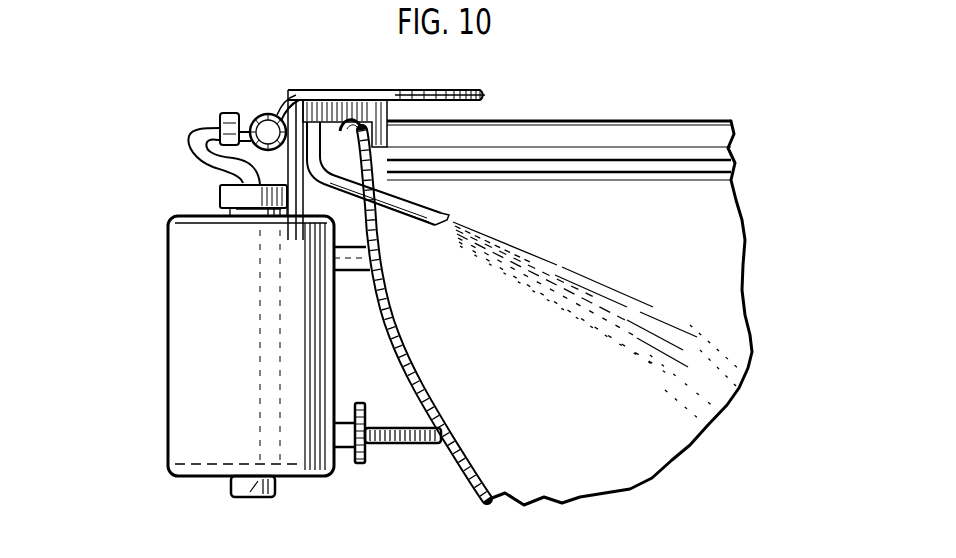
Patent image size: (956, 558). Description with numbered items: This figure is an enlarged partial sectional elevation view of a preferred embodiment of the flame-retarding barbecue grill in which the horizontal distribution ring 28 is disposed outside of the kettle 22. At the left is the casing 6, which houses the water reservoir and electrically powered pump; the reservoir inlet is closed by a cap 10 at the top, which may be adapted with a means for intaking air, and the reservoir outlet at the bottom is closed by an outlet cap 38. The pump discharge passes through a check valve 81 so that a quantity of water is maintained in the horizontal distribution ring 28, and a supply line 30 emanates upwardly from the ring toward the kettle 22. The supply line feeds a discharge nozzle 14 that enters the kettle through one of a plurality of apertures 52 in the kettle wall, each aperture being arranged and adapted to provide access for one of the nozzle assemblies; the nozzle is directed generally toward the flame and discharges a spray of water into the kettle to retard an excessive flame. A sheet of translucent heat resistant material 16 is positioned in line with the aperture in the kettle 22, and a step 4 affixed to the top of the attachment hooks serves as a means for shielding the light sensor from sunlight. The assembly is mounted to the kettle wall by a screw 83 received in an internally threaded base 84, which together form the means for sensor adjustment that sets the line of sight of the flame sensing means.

The step 4 is at (460, 92).
The casing 6 is at (176, 434).
The cap 10 is at (232, 190).
The discharge nozzle 14 is at (446, 212).
The sheet of translucent heat resistant material 16 is at (356, 276).
The kettle 22 is at (480, 492).
The horizontal distribution ring 28 is at (255, 116).
The supply line 30 is at (192, 143).
The outlet cap 38 is at (244, 498).
The apertures 52 is at (346, 209).
The check valve 81 is at (230, 114).
The screw 83 is at (413, 447).
The internally threaded base 84 is at (360, 467).